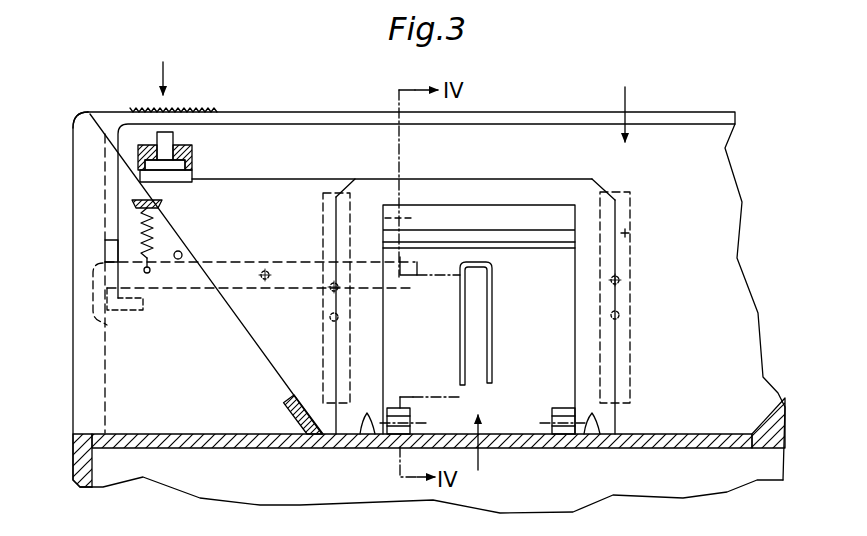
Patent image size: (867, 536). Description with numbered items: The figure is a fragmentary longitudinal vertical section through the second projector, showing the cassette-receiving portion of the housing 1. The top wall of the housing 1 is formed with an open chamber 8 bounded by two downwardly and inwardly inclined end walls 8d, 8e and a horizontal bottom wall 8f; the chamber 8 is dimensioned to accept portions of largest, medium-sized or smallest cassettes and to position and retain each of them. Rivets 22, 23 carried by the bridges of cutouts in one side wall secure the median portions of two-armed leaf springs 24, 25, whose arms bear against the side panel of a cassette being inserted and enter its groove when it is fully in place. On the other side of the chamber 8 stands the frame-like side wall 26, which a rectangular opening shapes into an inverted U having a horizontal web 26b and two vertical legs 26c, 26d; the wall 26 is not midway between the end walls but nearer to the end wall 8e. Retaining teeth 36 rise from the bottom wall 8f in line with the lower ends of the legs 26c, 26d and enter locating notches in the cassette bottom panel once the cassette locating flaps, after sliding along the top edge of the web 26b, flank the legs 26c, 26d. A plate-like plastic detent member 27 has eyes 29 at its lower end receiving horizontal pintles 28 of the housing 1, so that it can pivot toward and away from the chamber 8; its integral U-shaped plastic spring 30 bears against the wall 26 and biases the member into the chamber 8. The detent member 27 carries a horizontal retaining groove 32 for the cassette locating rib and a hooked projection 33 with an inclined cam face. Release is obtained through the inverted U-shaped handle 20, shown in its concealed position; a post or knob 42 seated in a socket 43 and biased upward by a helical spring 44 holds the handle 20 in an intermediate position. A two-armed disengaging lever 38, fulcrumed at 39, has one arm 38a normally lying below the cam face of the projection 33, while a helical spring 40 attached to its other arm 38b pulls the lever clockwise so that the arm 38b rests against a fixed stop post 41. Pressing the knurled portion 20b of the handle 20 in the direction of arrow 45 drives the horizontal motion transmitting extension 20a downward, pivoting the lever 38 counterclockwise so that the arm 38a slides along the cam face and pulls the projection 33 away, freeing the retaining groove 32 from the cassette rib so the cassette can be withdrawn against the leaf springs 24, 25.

The housing 1 is at (86, 113).
The chamber 8 is at (624, 101).
The end wall 8d is at (773, 394).
The end wall 8e is at (287, 410).
The bottom wall 8f is at (698, 440).
The handle 20 is at (337, 123).
The motion transmitting extension 20a is at (102, 320).
The knurled portion 20b is at (185, 110).
The rivet 22 is at (330, 289).
The rivet 23 is at (331, 320).
The leaf spring 24 is at (322, 218).
The leaf spring 25 is at (629, 233).
The frame-like side wall 26 is at (562, 177).
The web 26b is at (482, 188).
The leg 26c is at (334, 372).
The leg 26d is at (610, 412).
The detent member 27 is at (480, 463).
The pintle 28 is at (390, 434).
The eye 29 is at (386, 410).
The U-shaped plastic spring 30 is at (493, 350).
The retaining groove 32 is at (527, 249).
The hooked projection 33 is at (415, 218).
The retaining tooth 36 is at (367, 426).
The disengaging lever 38 is at (233, 283).
The lever arm 38a is at (412, 280).
The lever arm 38b is at (135, 280).
The fulcrum 39 is at (267, 280).
The helical spring 40 is at (150, 228).
The stop post 41 is at (182, 253).
The knob 42 is at (171, 137).
The socket 43 is at (192, 158).
The helical spring 44 is at (170, 175).
The arrow 45 is at (163, 72).